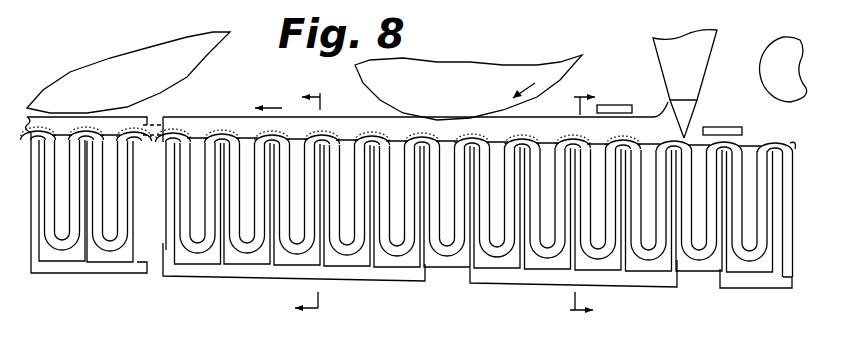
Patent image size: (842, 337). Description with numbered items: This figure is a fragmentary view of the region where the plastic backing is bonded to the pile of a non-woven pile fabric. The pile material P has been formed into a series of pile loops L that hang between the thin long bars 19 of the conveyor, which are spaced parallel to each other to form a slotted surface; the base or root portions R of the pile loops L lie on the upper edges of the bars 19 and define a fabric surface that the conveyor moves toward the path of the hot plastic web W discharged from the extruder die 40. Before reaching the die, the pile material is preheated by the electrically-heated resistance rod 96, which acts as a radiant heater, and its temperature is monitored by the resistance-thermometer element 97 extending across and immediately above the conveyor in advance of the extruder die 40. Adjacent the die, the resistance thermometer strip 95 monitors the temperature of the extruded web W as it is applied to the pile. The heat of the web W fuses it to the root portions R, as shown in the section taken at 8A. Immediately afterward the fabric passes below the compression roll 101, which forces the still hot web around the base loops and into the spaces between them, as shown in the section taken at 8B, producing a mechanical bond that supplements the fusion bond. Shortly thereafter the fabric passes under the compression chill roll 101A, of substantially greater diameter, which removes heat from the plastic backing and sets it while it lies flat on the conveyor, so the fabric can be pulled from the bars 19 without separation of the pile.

The bars 19 is at (168, 244).
The extruder die 40 is at (697, 62).
The resistance thermometer strip 95 is at (633, 107).
The electrically-heated resistance rod 96 is at (785, 57).
The resistance-thermometer element 97 is at (727, 128).
The compression roll 101 is at (545, 75).
The compression chill roll 101A is at (155, 52).
The hot plastic web W is at (60, 125).
The root portions R is at (130, 130).
The pile loops L is at (273, 253).
The pile material P is at (789, 143).
The section line 8A is at (596, 205).
The section line 8B is at (304, 202).